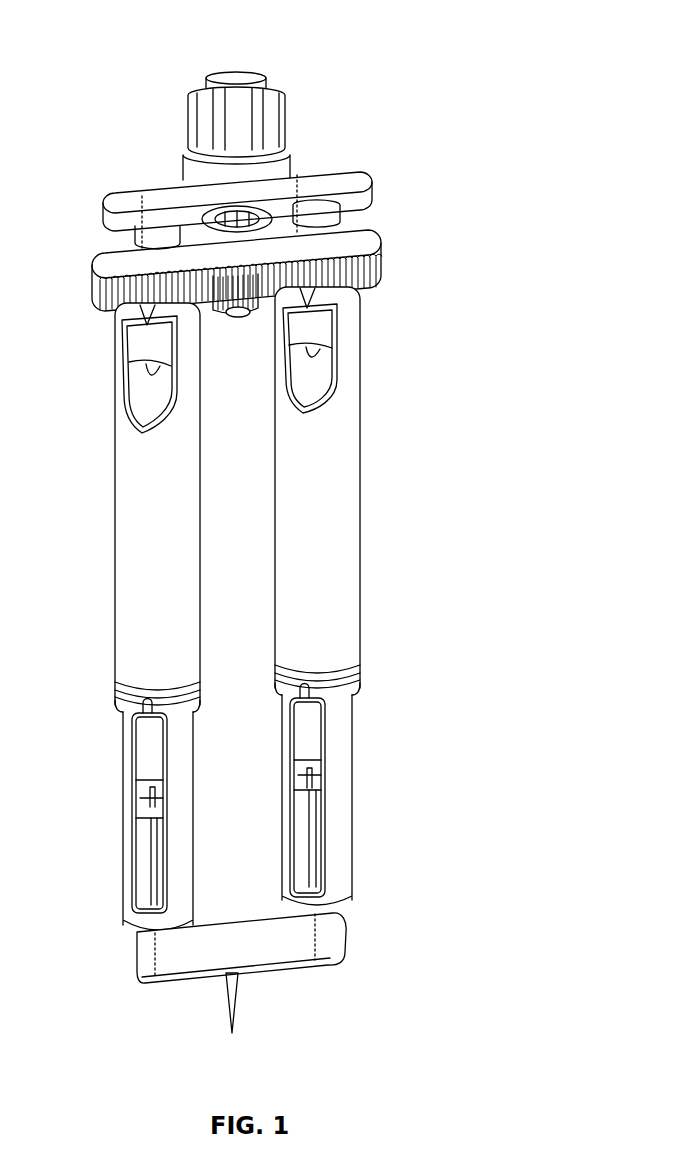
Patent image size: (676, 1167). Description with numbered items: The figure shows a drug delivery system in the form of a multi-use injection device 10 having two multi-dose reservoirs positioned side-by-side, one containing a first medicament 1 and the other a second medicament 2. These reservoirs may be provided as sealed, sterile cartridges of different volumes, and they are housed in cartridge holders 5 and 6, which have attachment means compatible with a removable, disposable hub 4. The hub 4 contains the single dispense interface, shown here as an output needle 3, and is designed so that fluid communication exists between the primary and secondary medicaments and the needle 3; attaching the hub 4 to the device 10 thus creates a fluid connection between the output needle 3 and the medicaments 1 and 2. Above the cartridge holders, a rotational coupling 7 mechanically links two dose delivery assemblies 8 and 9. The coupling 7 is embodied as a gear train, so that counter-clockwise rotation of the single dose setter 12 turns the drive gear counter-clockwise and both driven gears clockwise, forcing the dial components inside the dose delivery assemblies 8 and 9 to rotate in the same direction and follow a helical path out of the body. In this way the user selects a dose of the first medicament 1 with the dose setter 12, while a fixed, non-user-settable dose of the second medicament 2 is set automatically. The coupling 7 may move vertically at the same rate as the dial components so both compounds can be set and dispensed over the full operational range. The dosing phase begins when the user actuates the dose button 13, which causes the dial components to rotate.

The first medicament 1 is at (150, 837).
The second medicament 2 is at (315, 842).
The output needle 3 is at (237, 1004).
The hub 4 is at (238, 955).
The cartridge holder 5 is at (353, 758).
The cartridge holder 6 is at (123, 763).
The rotational coupling 7 is at (373, 231).
The dose delivery assembly 8 is at (115, 512).
The dose delivery assembly 9 is at (358, 468).
The multi-use injection device 10 is at (481, 419).
The single dose setter 12 is at (288, 124).
The dose button 13 is at (245, 68).